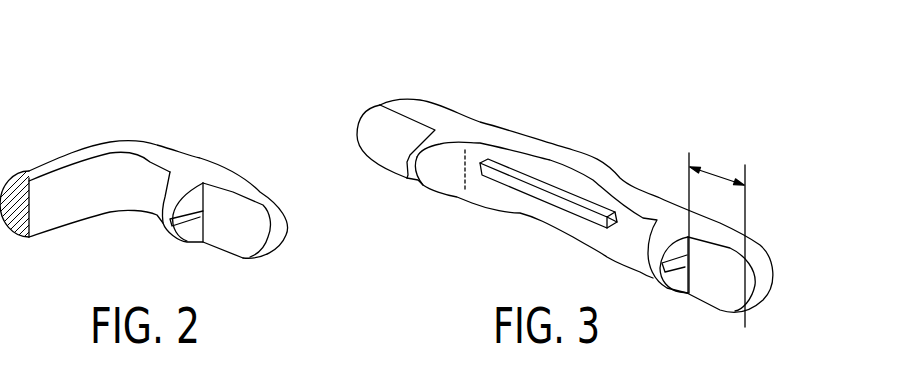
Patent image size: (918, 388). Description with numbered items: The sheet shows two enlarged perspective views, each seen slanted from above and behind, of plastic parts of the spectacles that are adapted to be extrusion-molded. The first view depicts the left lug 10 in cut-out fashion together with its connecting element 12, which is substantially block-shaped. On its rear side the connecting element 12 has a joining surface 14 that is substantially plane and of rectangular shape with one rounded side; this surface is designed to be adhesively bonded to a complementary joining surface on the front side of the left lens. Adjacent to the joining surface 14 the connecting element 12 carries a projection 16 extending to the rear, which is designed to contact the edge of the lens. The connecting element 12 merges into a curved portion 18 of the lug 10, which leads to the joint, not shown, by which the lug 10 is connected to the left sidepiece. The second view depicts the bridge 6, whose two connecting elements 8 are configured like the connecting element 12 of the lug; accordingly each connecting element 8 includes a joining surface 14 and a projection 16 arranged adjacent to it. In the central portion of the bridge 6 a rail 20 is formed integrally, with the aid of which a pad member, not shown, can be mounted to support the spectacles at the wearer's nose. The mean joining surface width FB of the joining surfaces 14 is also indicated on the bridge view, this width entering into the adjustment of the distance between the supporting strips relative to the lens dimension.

In FIG. 2, the left lug 10 is at (45, 160).
In FIG. 2, the curved portion 18 is at (107, 145).
In FIG. 2, the connecting element 12 is at (233, 190).
In FIG. 2, the projection 16 is at (165, 195).
In FIG. 3, the projection 16 is at (428, 175).
In FIG. 2, the joining surface 14 is at (228, 242).
In FIG. 3, the joining surface 14 is at (377, 142).
In FIG. 3, the bridge 6 is at (595, 138).
In FIG. 3, the connecting elements 8 is at (433, 112).
In FIG. 3, the rail 20 is at (543, 197).
In FIG. 3, the mean joining surface width FB is at (715, 172).